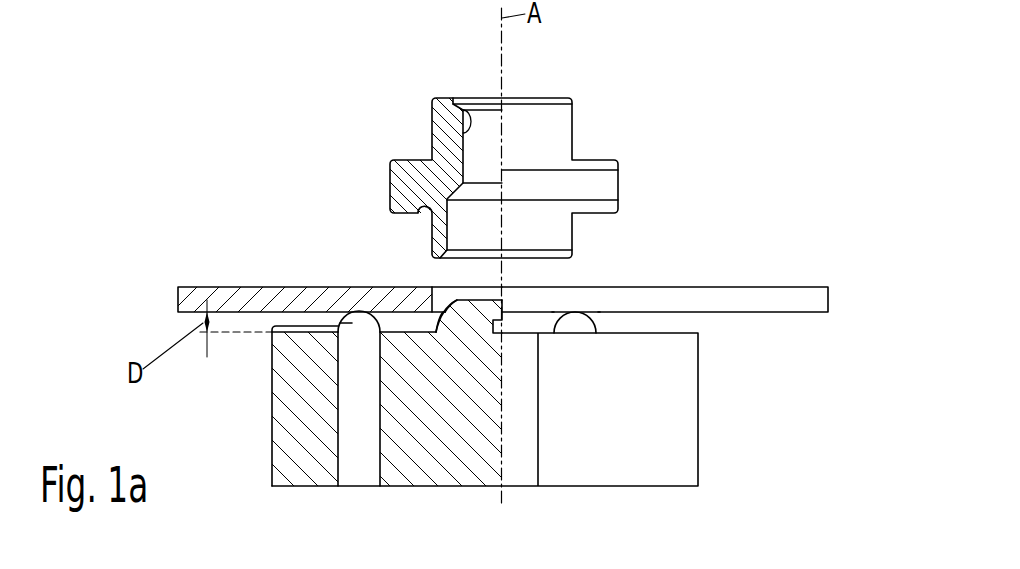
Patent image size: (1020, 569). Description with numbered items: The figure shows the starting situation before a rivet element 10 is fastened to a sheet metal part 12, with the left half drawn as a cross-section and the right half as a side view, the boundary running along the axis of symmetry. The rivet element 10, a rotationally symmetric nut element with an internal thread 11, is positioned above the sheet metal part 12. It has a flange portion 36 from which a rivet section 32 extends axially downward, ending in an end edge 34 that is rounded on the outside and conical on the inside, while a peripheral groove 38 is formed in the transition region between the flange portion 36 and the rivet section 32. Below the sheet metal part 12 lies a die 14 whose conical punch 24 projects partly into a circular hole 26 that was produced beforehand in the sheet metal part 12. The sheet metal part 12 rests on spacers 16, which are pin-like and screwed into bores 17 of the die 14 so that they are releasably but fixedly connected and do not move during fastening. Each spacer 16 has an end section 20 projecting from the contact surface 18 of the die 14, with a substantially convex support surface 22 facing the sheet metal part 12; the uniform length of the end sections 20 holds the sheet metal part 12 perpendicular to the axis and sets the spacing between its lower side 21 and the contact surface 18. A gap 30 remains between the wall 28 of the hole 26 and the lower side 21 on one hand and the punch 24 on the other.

The rivet element 10 is at (622, 118).
The internal thread 11 is at (469, 108).
The sheet metal part 12 is at (753, 298).
The die 14 is at (673, 452).
The spacers 16 is at (349, 409).
The bores 17 is at (338, 452).
The contact surface 18 is at (316, 334).
The end section 20 is at (273, 328).
The lower side 21 is at (185, 315).
The support surface 22 is at (593, 310).
The conical punch 24 is at (436, 335).
The circular hole 26 is at (450, 292).
The wall 28 is at (436, 288).
The gap 30 is at (424, 335).
The rivet section 32 is at (562, 229).
The end edge 34 is at (558, 252).
The flange portion 36 is at (424, 178).
The peripheral groove 38 is at (420, 216).